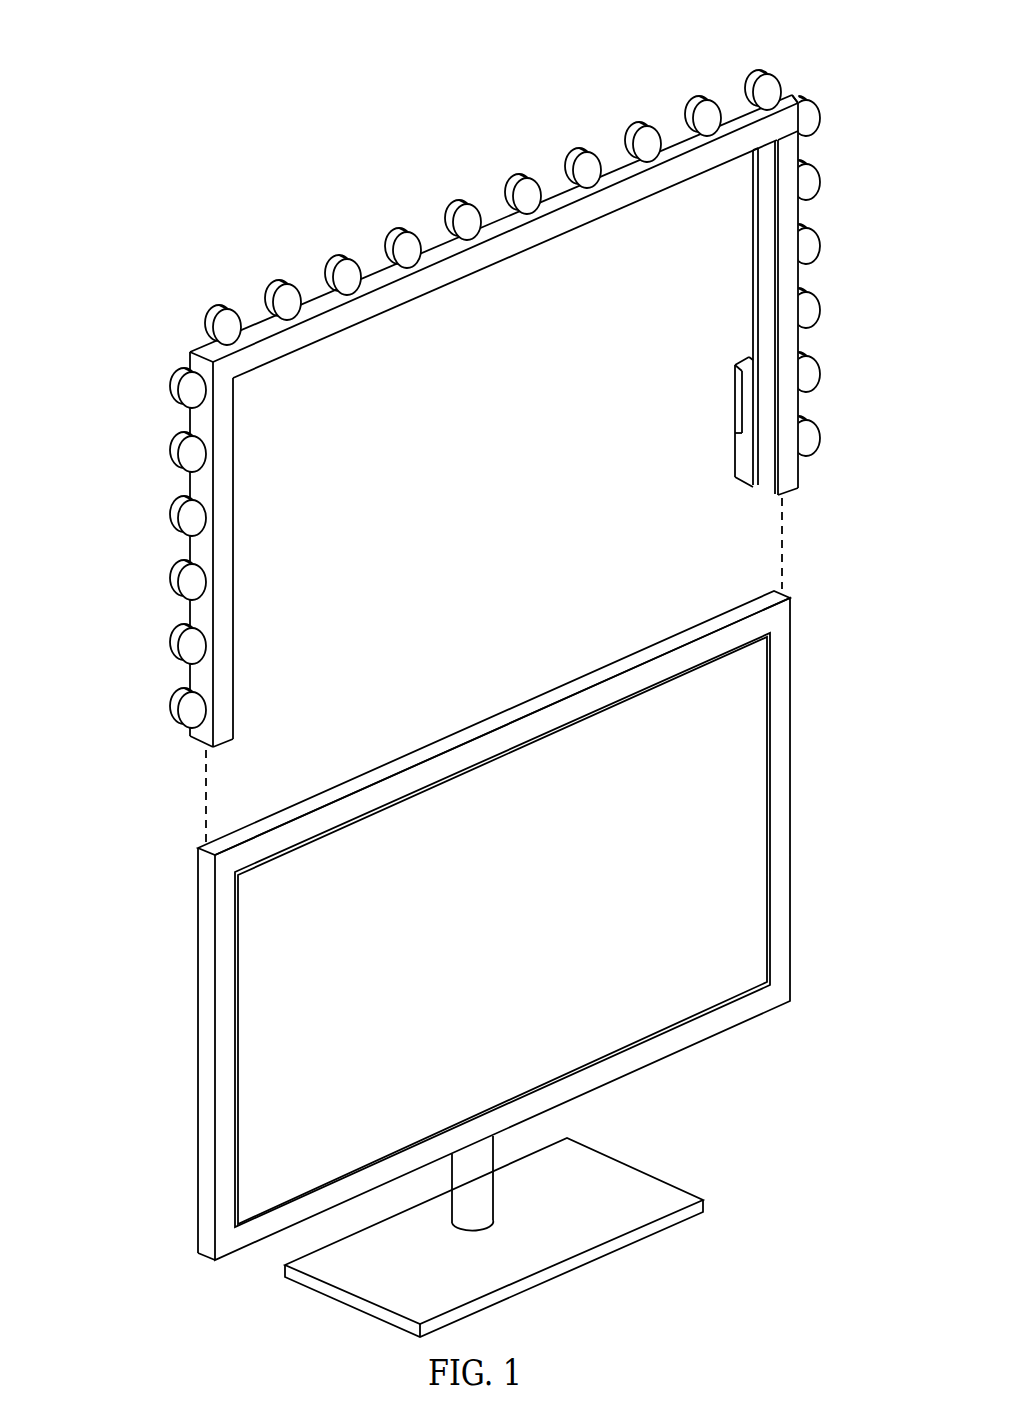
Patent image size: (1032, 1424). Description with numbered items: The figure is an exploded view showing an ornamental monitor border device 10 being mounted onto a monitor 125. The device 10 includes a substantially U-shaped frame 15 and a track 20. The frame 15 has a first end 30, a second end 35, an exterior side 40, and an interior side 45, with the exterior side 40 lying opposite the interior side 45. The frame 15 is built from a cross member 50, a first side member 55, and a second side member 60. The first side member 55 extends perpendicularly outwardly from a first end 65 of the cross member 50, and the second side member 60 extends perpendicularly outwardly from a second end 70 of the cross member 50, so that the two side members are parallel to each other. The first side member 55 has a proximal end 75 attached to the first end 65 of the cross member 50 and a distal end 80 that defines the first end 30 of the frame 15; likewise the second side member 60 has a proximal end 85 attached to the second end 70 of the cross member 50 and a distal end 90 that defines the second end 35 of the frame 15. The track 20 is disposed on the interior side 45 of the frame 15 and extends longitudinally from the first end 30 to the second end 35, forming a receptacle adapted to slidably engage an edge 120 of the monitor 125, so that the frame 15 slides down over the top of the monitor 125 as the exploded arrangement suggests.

The ornamental monitor border device 10 is at (476, 671).
The substantially U-shaped frame 15 is at (476, 426).
The track 20 is at (764, 259).
The first end 30 is at (188, 524).
The second end 35 is at (781, 250).
The exterior side 40 is at (494, 224).
The interior side 45 is at (475, 279).
The cross member 50 is at (548, 228).
The first side member 55 is at (229, 543).
The second side member 60 is at (788, 283).
The first end 65 is at (187, 351).
The second end 70 is at (793, 96).
The proximal end 75 is at (238, 411).
The distal end 80 is at (237, 702).
The proximal end 85 is at (801, 150).
The distal end 90 is at (801, 472).
The edge 120 is at (541, 956).
The monitor 125 is at (519, 681).